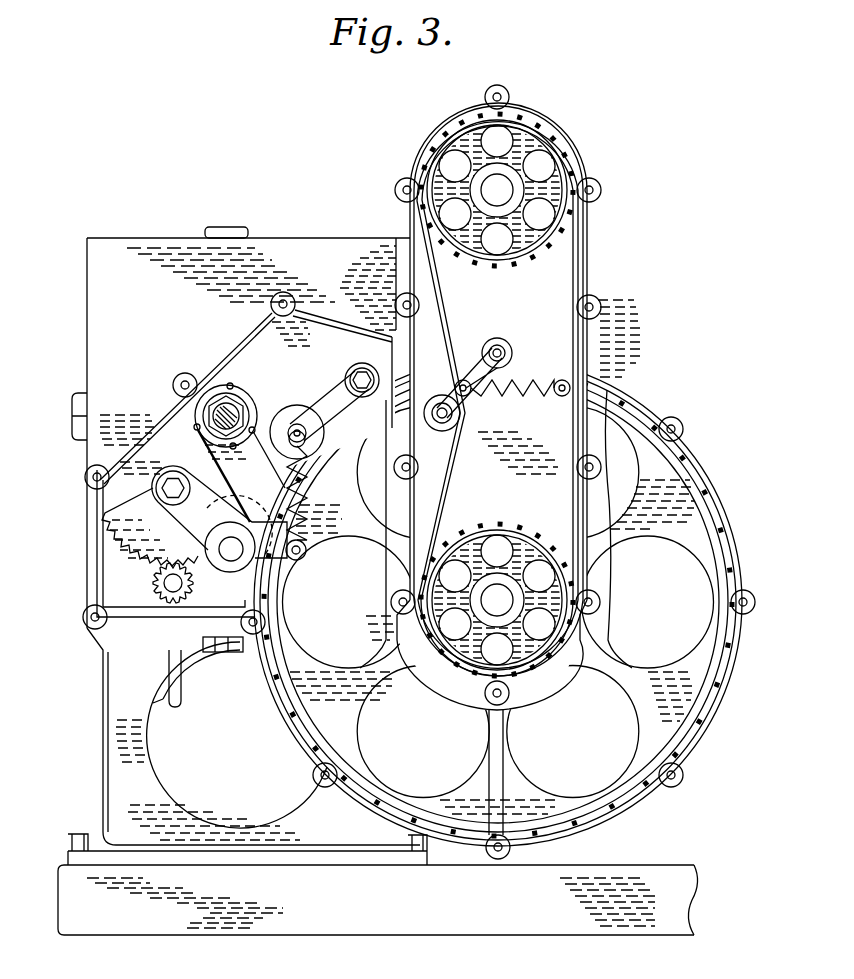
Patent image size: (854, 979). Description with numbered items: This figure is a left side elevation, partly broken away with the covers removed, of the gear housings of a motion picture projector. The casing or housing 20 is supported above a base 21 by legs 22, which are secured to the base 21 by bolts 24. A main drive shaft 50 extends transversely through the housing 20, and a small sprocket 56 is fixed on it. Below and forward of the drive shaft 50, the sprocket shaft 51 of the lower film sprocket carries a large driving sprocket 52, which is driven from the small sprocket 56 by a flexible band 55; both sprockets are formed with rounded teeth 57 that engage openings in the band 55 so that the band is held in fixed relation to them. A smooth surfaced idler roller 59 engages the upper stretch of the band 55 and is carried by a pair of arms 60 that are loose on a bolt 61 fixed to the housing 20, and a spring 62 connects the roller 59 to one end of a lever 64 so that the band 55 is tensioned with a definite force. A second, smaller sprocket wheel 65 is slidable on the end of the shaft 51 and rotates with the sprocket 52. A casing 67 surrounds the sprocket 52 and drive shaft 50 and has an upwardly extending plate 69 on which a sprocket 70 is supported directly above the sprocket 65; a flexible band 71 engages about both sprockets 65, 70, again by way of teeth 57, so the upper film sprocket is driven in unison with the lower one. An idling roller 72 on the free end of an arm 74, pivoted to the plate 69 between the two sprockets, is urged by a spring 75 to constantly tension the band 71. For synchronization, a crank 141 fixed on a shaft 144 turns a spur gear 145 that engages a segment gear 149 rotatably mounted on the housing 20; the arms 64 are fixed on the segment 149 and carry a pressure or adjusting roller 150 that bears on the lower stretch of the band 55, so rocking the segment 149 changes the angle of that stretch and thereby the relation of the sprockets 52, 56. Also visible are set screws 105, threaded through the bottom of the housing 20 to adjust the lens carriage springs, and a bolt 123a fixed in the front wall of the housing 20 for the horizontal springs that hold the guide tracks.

The casing or housing 20 is at (147, 238).
The base 21 is at (683, 921).
The legs 22 is at (110, 760).
The bolts 24 is at (78, 834).
The drive shaft 50 is at (215, 415).
The sprocket shaft 51 is at (499, 600).
The large driving sprocket 52 is at (683, 516).
The flexible band 55 is at (232, 497).
The small sprocket 56 is at (238, 400).
The rounded teeth 57 is at (513, 266).
The idler roller 59 is at (286, 412).
The arms 60 is at (333, 390).
The bolt 61 is at (368, 376).
The spring 62 is at (293, 535).
The lever 64 is at (264, 536).
The second smaller sprocket wheel 65 is at (488, 530).
The casing 67 is at (643, 408).
The upwardly extending plate 69 is at (592, 239).
The sprocket 70 is at (530, 132).
The flexible band 71 is at (445, 312).
The idling roller 72 is at (444, 425).
The arm 74 is at (470, 365).
The spring 75 is at (520, 398).
The set screws 105 is at (243, 653).
The bolt 123a is at (75, 403).
The crank 141 is at (197, 672).
The shaft 144 is at (172, 588).
The spur gear 145 is at (155, 588).
The segment gear 149 is at (128, 521).
The pressure or adjusting roller 150 is at (225, 522).